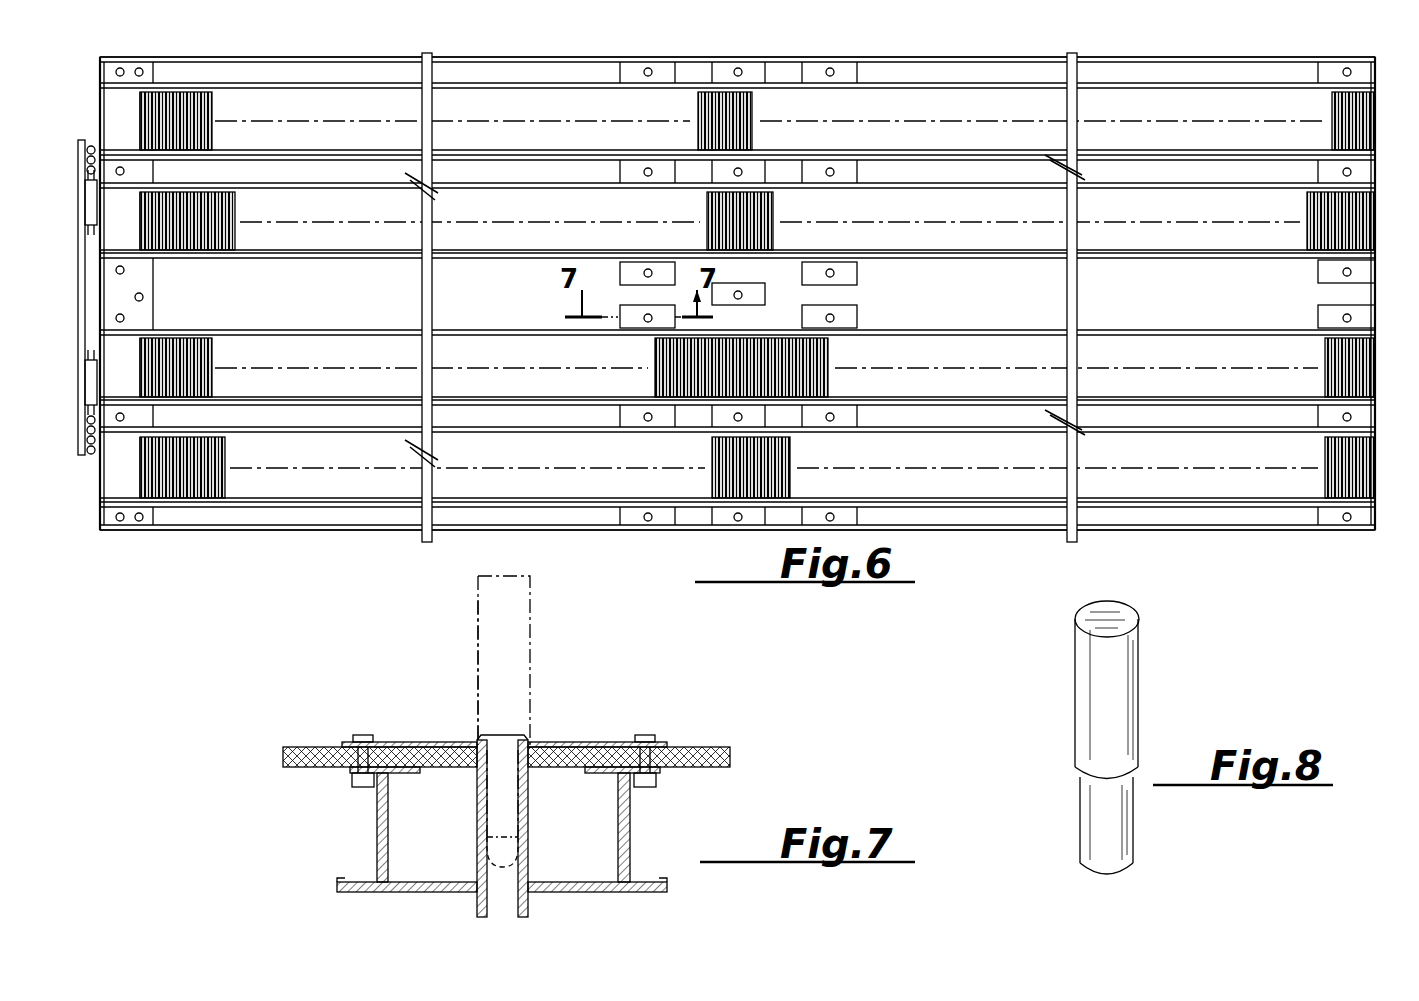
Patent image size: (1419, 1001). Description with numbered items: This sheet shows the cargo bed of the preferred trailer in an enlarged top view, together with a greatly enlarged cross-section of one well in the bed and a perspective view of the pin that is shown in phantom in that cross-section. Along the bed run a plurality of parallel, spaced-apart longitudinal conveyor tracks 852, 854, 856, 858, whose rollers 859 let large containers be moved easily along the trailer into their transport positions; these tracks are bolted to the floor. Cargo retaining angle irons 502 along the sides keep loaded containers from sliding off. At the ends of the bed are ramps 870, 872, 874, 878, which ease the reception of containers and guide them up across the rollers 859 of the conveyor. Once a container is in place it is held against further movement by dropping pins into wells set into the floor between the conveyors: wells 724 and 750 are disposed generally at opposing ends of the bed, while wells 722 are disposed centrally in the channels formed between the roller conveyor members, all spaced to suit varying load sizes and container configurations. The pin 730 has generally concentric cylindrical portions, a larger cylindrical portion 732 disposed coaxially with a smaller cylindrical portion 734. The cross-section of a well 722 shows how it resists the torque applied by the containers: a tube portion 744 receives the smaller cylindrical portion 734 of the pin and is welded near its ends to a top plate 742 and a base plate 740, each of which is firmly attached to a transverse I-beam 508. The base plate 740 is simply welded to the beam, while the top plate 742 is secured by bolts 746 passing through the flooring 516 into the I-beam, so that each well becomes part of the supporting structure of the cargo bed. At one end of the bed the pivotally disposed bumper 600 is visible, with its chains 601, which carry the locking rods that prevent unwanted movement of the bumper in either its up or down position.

In FIG. 6, the cargo retaining angle irons 502 is at (480, 66).
In FIG. 7, the transverse beam 508 is at (380, 826).
In FIG. 6, the flooring 516 is at (1005, 305).
In FIG. 7, the flooring 516 is at (735, 752).
In FIG. 6, the bumper 600 is at (78, 292).
In FIG. 6, the chains 601 is at (90, 148).
In FIG. 6, the well 722 is at (810, 65).
In FIG. 7, the well 722 is at (602, 745).
In FIG. 6, the well 724 is at (1323, 70).
In FIG. 7, the pin 730 is at (535, 655).
In FIG. 8, the pin 730 is at (1125, 737).
In FIG. 7, the larger cylindrical portion 732 is at (478, 645).
In FIG. 8, the larger cylindrical portion 732 is at (1095, 706).
In FIG. 7, the smaller cylindrical portion 734 is at (508, 828).
In FIG. 8, the smaller cylindrical portion 734 is at (1095, 822).
In FIG. 7, the base plate 740 is at (577, 892).
In FIG. 7, the top plate 742 is at (548, 742).
In FIG. 7, the tube portion 744 is at (478, 797).
In FIG. 7, the bolts 746 is at (368, 735).
In FIG. 6, the well 750 is at (152, 73).
In FIG. 6, the conveyor track 852 is at (313, 93).
In FIG. 6, the conveyor track 854 is at (360, 250).
In FIG. 6, the conveyor track 856 is at (455, 333).
In FIG. 6, the conveyor track 858 is at (300, 488).
In FIG. 6, the rollers 859 is at (210, 140).
In FIG. 6, the ramp 870 is at (112, 485).
In FIG. 6, the ramp 872 is at (115, 370).
In FIG. 6, the ramp 874 is at (112, 235).
In FIG. 6, the ramp 878 is at (110, 113).